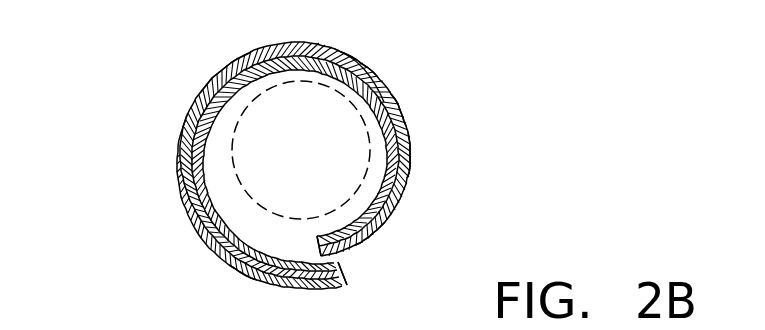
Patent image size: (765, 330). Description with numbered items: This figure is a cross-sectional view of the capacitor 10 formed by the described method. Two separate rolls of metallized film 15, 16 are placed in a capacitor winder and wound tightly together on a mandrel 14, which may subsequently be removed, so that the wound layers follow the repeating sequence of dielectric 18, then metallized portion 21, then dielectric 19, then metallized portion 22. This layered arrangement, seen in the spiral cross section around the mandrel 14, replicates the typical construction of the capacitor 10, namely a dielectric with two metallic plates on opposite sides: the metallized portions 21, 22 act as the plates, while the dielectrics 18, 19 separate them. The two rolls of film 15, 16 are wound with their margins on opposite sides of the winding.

The capacitor 10 is at (146, 211).
The mandrel 14 is at (250, 153).
The metallized film 15 is at (400, 110).
The metallized film 16 is at (230, 72).
The dielectric 18 is at (410, 165).
The dielectric 19 is at (373, 230).
The metallized portion 21 is at (358, 61).
The metallized portion 22 is at (243, 272).